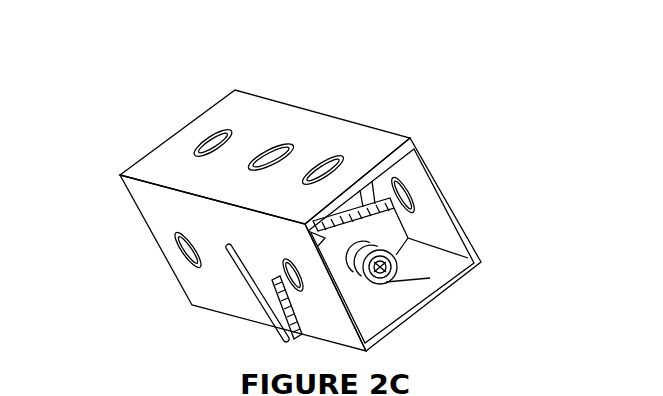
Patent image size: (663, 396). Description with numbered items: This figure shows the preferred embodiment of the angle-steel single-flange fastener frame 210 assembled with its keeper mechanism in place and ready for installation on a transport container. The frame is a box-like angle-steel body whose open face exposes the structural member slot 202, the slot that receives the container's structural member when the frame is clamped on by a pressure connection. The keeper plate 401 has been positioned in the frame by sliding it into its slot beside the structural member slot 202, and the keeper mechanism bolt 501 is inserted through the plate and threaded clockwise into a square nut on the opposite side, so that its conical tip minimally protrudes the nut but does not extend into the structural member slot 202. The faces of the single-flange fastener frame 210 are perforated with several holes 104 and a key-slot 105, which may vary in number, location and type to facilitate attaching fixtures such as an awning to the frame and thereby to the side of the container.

The holes 104 is at (200, 140).
The key-slots 105 is at (282, 151).
The single-flange fastener frame 210 is at (393, 111).
The structural member slot 202 is at (254, 284).
The keeper plate 401 is at (286, 321).
The keeper mechanism bolt 501 is at (398, 268).